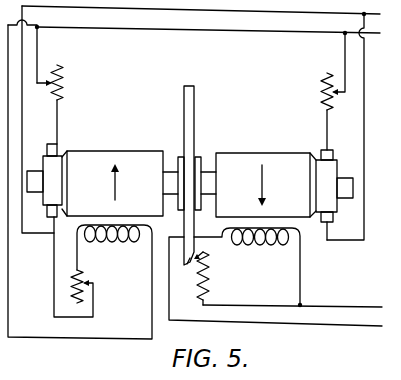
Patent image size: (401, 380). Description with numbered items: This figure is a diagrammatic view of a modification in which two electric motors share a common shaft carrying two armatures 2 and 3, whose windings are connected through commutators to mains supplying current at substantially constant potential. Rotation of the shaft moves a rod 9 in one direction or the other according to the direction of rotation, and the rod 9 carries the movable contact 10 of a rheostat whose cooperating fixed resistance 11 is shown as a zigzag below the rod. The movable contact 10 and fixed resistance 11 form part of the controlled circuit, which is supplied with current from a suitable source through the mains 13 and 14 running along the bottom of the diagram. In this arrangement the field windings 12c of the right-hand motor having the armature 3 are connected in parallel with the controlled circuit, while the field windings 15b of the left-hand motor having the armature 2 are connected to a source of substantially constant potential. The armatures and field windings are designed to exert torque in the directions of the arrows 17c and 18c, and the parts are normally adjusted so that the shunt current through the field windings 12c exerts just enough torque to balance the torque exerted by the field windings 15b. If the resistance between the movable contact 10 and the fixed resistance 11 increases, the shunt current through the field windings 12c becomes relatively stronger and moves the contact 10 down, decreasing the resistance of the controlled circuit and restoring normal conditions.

The armature 2 is at (90, 158).
The armature 3 is at (240, 160).
The rod 9 is at (188, 130).
The movable contact 10 is at (193, 263).
The fixed resistance 11 is at (219, 274).
The field windings 12c is at (264, 246).
The main 13 is at (342, 307).
The main 14 is at (362, 328).
The field windings 15b is at (118, 246).
The arrow 17c is at (99, 182).
The arrow 18c is at (245, 184).